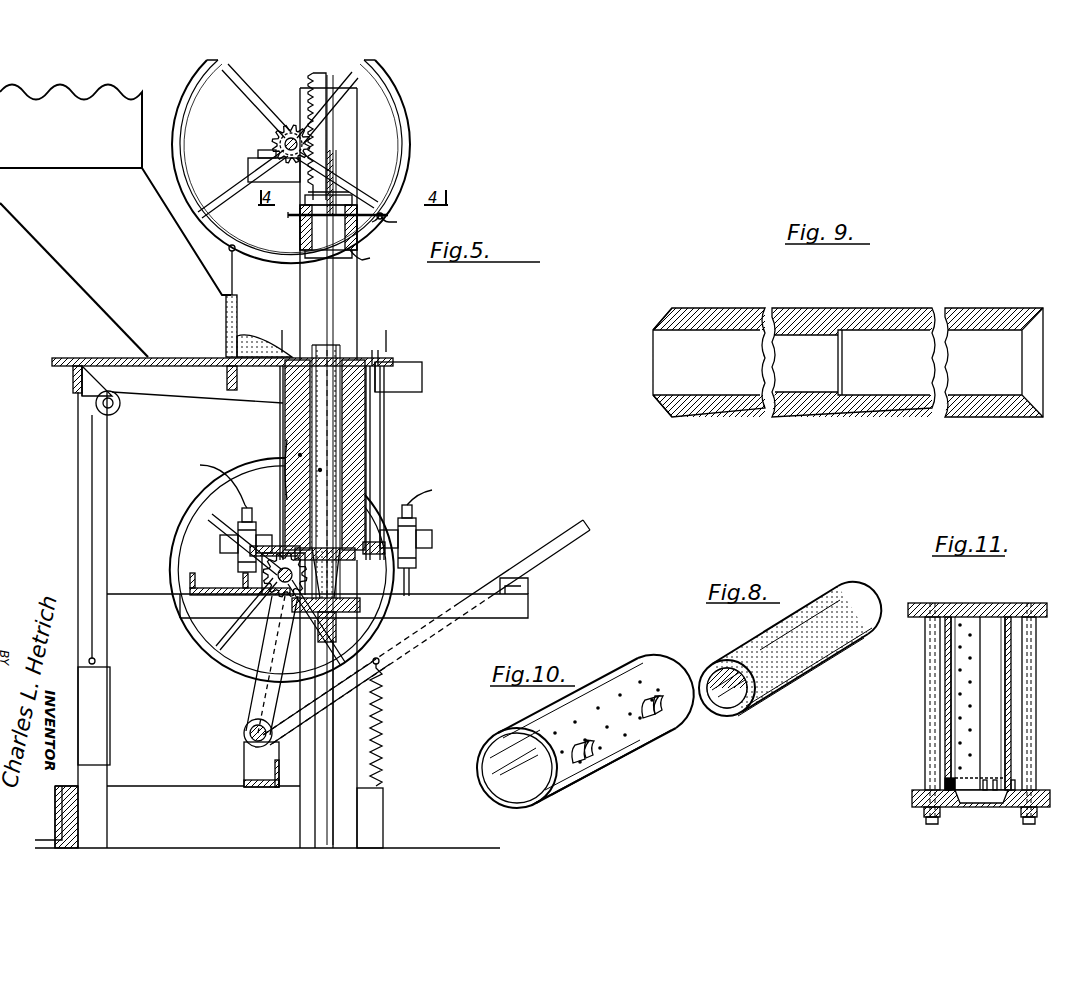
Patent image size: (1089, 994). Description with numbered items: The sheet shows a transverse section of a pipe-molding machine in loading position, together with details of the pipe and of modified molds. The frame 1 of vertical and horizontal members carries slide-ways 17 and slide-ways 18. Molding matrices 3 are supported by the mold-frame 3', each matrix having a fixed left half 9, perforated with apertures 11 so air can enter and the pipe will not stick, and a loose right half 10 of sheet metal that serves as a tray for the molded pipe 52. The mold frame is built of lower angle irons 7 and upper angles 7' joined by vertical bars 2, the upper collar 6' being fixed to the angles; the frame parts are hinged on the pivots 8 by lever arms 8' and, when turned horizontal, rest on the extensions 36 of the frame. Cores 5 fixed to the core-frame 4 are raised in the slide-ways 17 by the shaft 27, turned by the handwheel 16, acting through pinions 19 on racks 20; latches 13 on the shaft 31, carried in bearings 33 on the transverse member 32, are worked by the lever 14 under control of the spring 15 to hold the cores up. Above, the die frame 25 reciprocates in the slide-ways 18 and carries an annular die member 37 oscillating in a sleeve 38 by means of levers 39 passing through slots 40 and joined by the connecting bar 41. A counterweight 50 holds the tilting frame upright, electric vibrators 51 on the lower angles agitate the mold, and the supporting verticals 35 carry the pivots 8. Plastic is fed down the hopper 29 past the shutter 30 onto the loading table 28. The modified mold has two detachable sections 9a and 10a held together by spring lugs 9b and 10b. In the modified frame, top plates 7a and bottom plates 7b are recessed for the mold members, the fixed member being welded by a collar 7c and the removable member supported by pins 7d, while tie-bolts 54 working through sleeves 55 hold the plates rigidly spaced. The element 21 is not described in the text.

In FIG. 5, the frame 1 is at (352, 303).
In FIG. 5, the vertical bars 2 is at (386, 480).
In FIG. 5, the molding matrices 3 is at (350, 463).
In FIG. 5, the mold-frame 3' is at (341, 333).
In FIG. 5, the core-frame 4 is at (358, 612).
In FIG. 5, the cores 5 is at (325, 426).
In FIG. 5, the divided collar 6' is at (391, 334).
In FIG. 5, the lower angle irons 7 is at (416, 581).
In FIG. 5, the upper angles 7' is at (414, 377).
In FIG. 11, the top plates 7a is at (914, 602).
In FIG. 11, the bottom plates 7b is at (950, 808).
In FIG. 11, the collar 7c is at (945, 780).
In FIG. 11, the pins 7d is at (1016, 784).
In FIG. 5, the pivots 8 is at (341, 573).
In FIG. 5, the lever arms 8' is at (388, 488).
In FIG. 5, the left mold half 9 is at (290, 403).
In FIG. 11, the left mold half 9 is at (958, 720).
In FIG. 10, the mold section 9a is at (652, 668).
In FIG. 10, the lugs 9b is at (568, 762).
In FIG. 5, the right mold half 10 is at (360, 410).
In FIG. 8, the right mold half 10 is at (780, 695).
In FIG. 11, the right mold half 10 is at (1011, 700).
In FIG. 10, the mold section 10a is at (660, 718).
In FIG. 10, the lugs 10b is at (600, 760).
In FIG. 5, the apertures 11 is at (320, 470).
In FIG. 11, the apertures 11 is at (958, 745).
In FIG. 5, the latches 13 is at (266, 660).
In FIG. 5, the lever 14 is at (498, 566).
In FIG. 5, the spring 15 is at (386, 702).
In FIG. 5, the handwheel 16 is at (200, 496).
In FIG. 5, the slide-ways 17 is at (334, 338).
In FIG. 5, the slide-ways 18 is at (338, 132).
In FIG. 5, the pinions 19 is at (264, 592).
In FIG. 5, the racks 20 is at (300, 489).
In FIG. 5, the wheel 21 is at (404, 108).
In FIG. 5, the die frame 25 is at (333, 178).
In FIG. 5, the shaft 27 is at (260, 576).
In FIG. 5, the loading table 28 is at (187, 357).
In FIG. 5, the hopper 29 is at (72, 266).
In FIG. 5, the shutter 30 is at (237, 289).
In FIG. 5, the shaft 31 is at (244, 731).
In FIG. 5, the transverse member 32 is at (150, 792).
In FIG. 5, the bearings 33 is at (250, 757).
In FIG. 5, the mold-structure supporting verticals 35 is at (215, 622).
In FIG. 5, the extensions 36 is at (512, 606).
In FIG. 5, the annular die member 37 is at (354, 255).
In FIG. 5, the sleeve 38 is at (300, 226).
In FIG. 5, the levers 39 is at (378, 222).
In FIG. 5, the slots 40 is at (352, 203).
In FIG. 5, the connecting bar 41 is at (370, 212).
In FIG. 5, the counterweight 50 is at (100, 695).
In FIG. 5, the electric vibrators 51 is at (238, 531).
In FIG. 5, the molded pipes 52 is at (366, 445).
In FIG. 9, the molded pipes 52 is at (804, 418).
In FIG. 8, the molded pipes 52 is at (822, 602).
In FIG. 11, the tie-bolts 54 is at (930, 682).
In FIG. 11, the sleeves 55 is at (925, 657).